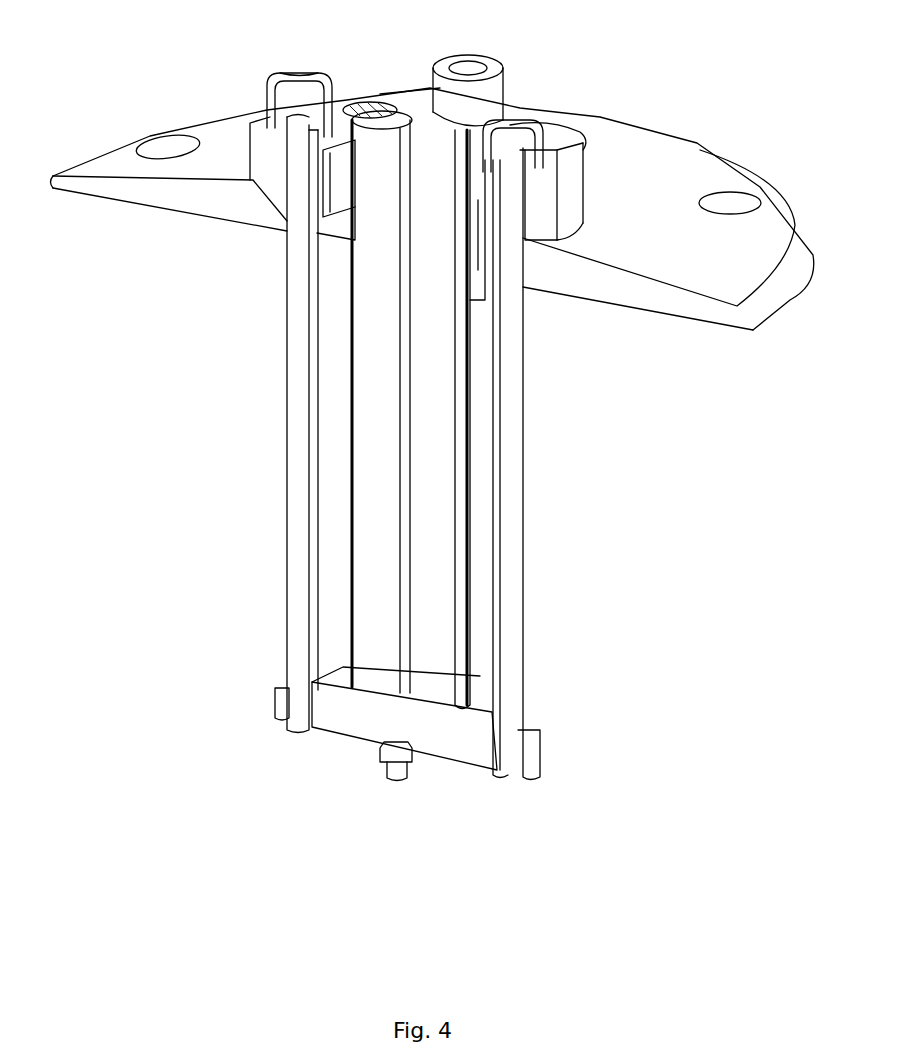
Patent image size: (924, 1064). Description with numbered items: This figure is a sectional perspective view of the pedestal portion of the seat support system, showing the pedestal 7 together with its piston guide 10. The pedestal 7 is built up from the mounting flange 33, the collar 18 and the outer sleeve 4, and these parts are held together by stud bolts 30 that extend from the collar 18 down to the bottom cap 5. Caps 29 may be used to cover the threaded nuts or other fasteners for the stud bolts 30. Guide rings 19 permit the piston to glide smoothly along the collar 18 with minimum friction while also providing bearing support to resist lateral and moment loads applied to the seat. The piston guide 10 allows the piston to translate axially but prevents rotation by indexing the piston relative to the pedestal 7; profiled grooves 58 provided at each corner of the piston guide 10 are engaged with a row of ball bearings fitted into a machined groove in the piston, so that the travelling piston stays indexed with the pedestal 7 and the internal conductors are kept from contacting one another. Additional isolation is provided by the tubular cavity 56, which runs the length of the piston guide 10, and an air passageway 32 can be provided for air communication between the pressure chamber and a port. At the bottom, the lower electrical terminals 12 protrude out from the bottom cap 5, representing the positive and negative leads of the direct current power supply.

The outer sleeve 4 is at (317, 430).
The bottom cap 5 is at (348, 728).
The pedestal 7 is at (186, 495).
The piston guide 10 is at (367, 558).
The lower electrical terminals 12 is at (407, 773).
The collar 18 is at (407, 92).
The guide rings 19 is at (332, 197).
The caps 29 is at (493, 65).
The stud bolts 30 is at (283, 315).
The air passageway 32 is at (409, 241).
The mounting flange 33 is at (667, 153).
The tubular cavity 56 is at (393, 106).
The grooves 58 is at (460, 413).